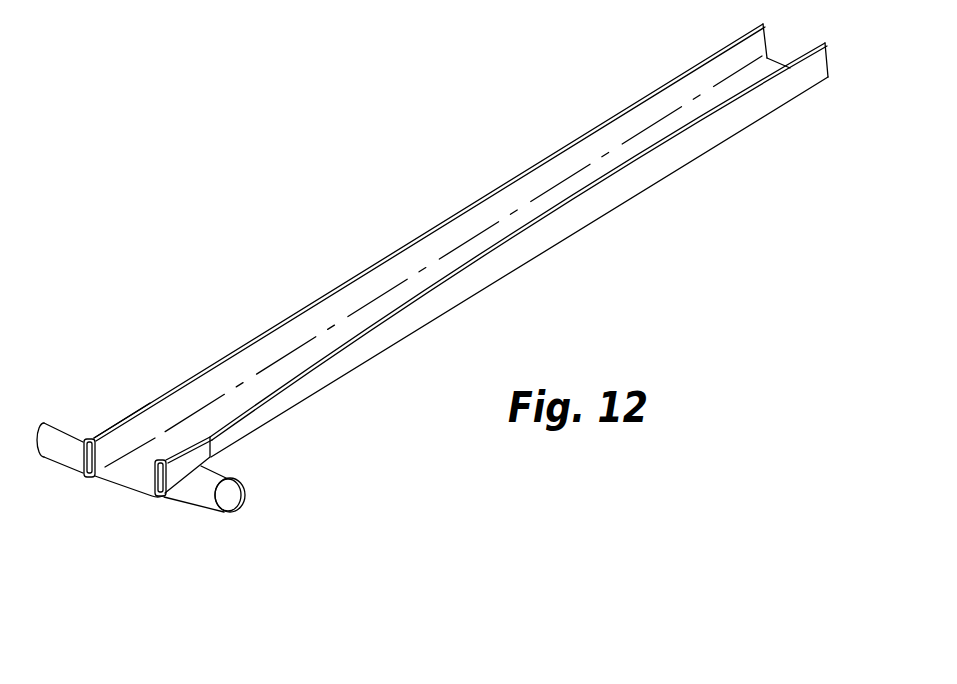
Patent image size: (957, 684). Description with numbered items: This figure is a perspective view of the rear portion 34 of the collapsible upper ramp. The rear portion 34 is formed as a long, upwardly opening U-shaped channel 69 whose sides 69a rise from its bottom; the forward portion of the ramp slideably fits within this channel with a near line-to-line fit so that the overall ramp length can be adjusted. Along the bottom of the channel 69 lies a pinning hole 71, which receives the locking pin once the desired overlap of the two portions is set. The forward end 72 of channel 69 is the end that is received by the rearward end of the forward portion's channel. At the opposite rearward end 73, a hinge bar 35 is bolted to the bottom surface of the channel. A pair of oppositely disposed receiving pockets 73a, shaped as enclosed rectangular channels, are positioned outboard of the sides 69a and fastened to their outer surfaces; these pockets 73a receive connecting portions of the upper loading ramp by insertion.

The rear portion 34 is at (446, 273).
The hinge bar 35 is at (202, 498).
The U-shaped channel 69 is at (752, 44).
The sides 69a is at (117, 442).
The pinning hole 71 is at (728, 97).
The forward end 72 is at (830, 58).
The rearward end 73 is at (138, 498).
The receiving pockets 73a is at (82, 470).